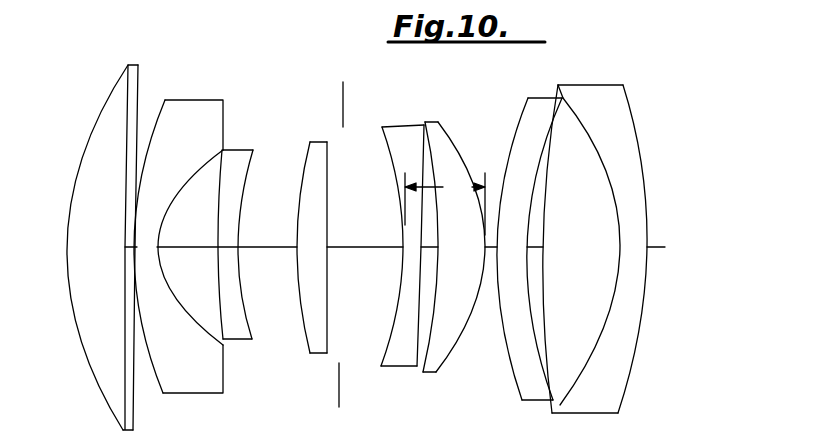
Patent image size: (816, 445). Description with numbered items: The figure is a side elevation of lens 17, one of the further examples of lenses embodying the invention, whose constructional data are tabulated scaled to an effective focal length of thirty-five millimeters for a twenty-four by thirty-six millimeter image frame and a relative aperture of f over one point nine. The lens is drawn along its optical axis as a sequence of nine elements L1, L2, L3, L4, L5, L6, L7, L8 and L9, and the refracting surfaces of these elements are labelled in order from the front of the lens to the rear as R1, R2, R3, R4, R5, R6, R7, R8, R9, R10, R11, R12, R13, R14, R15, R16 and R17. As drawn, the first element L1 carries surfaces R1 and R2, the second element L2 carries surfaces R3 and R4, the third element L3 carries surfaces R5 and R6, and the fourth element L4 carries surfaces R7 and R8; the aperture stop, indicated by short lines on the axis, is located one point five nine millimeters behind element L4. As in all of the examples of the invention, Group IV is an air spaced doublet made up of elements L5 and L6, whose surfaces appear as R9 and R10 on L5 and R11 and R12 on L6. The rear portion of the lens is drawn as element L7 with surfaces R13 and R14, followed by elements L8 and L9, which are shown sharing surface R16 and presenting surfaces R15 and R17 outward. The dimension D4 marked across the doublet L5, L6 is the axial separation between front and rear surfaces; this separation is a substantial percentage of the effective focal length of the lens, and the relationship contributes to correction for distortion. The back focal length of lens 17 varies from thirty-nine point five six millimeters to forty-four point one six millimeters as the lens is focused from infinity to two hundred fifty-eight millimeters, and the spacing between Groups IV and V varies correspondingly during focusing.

The lens 17 is at (675, 72).
The first lens element L1 is at (120, 78).
The second lens element L2 is at (192, 110).
The third lens element L3 is at (238, 165).
The lens element L4 is at (317, 150).
The lens element L5 is at (397, 128).
The lens element L6 is at (452, 142).
The seventh lens element L7 is at (522, 108).
The eighth lens element L8 is at (582, 128).
The ninth lens element L9 is at (636, 137).
The lens surface R1 is at (90, 365).
The lens surface R2 is at (132, 396).
The lens surface R3 is at (157, 373).
The lens surface R4 is at (169, 294).
The lens surface R5 is at (219, 320).
The lens surface R6 is at (240, 283).
The lens surface R7 is at (300, 298).
The lens surface R8 is at (328, 292).
The lens surface R9 is at (395, 312).
The lens surface R10 is at (421, 328).
The lens surface R11 is at (428, 337).
The lens surface R12 is at (452, 353).
The lens surface R13 is at (512, 353).
The lens surface R14 is at (541, 356).
The lens surface R15 is at (548, 358).
The lens surface R16 is at (597, 342).
The lens surface R17 is at (640, 325).
The axial separation D4 is at (445, 204).